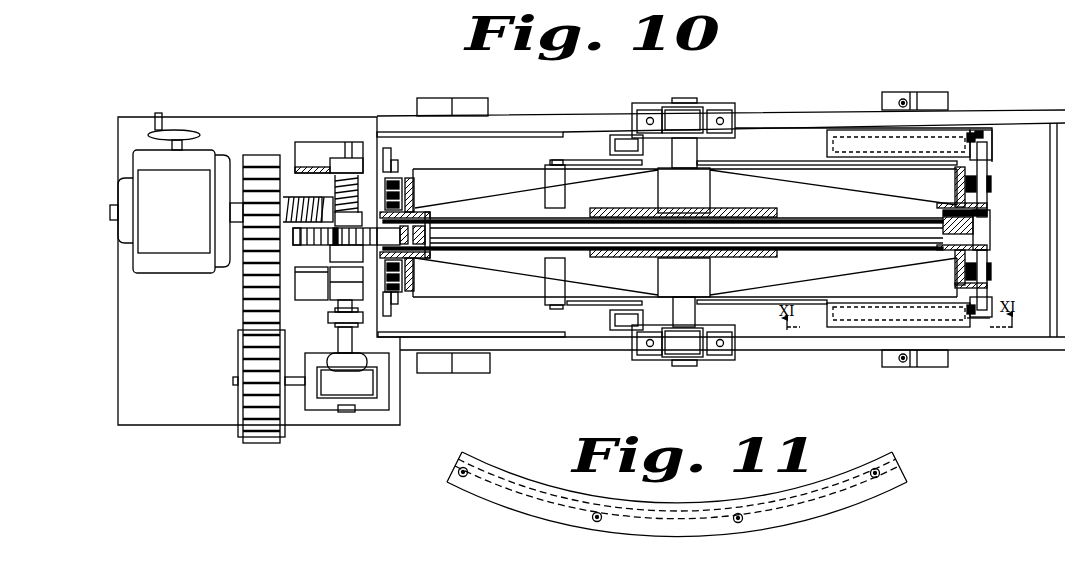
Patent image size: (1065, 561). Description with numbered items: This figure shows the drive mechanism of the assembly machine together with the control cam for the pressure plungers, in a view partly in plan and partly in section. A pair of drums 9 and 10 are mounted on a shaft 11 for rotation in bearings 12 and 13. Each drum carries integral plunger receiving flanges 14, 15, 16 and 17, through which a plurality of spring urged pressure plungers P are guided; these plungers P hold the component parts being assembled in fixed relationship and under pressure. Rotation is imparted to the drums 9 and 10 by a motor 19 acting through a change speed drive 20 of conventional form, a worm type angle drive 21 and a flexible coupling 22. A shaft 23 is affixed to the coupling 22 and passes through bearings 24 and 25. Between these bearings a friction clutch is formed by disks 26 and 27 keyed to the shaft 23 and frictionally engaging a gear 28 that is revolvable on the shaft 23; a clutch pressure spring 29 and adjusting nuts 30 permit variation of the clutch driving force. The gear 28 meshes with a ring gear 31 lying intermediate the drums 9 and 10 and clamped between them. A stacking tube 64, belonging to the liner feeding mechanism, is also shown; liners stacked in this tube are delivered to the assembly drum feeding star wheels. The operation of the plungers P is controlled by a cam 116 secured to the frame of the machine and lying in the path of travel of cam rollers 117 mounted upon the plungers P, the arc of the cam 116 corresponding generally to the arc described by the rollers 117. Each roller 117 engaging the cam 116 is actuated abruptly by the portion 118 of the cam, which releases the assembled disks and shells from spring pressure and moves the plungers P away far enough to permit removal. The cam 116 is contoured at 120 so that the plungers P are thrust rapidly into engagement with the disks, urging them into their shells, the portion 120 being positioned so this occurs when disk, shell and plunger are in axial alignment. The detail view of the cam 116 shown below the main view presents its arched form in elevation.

In FIG. 10, the drum 9 is at (862, 256).
In FIG. 10, the drum 10 is at (848, 198).
In FIG. 10, the shaft 11 is at (688, 152).
In FIG. 10, the bearing 12 is at (683, 118).
In FIG. 10, the bearing 13 is at (683, 331).
In FIG. 10, the plunger receiving flange 14 is at (985, 172).
In FIG. 10, the plunger receiving flange 15 is at (984, 204).
In FIG. 10, the plunger receiving flange 16 is at (984, 250).
In FIG. 10, the plunger receiving flange 17 is at (985, 285).
In FIG. 10, the motor 19 is at (176, 193).
In FIG. 10, the change speed drive 20 is at (262, 155).
In FIG. 10, the worm type angle drive 21 is at (337, 382).
In FIG. 10, the flexible coupling 22 is at (336, 322).
In FIG. 10, the shaft 23 is at (340, 302).
In FIG. 10, the bearing 24 is at (329, 283).
In FIG. 10, the bearing 25 is at (359, 142).
In FIG. 10, the clutch disk 26 is at (346, 245).
In FIG. 10, the clutch disk 27 is at (348, 220).
In FIG. 10, the gear 28 is at (316, 245).
In FIG. 10, the clutch pressure spring 29 is at (360, 188).
In FIG. 10, the adjusting nuts 30 is at (328, 190).
In FIG. 10, the ring gear 31 is at (413, 232).
In FIG. 10, the stacking tube 64 is at (907, 98).
In FIG. 10, the cam 116 is at (869, 320).
In FIG. 11, the cam 116 is at (895, 472).
In FIG. 10, the cam roller 117 is at (972, 316).
In FIG. 10, the cam portion 118 is at (930, 303).
In FIG. 10, the cam contour portion 120 is at (827, 145).
In FIG. 10, the pressure plunger P is at (986, 190).